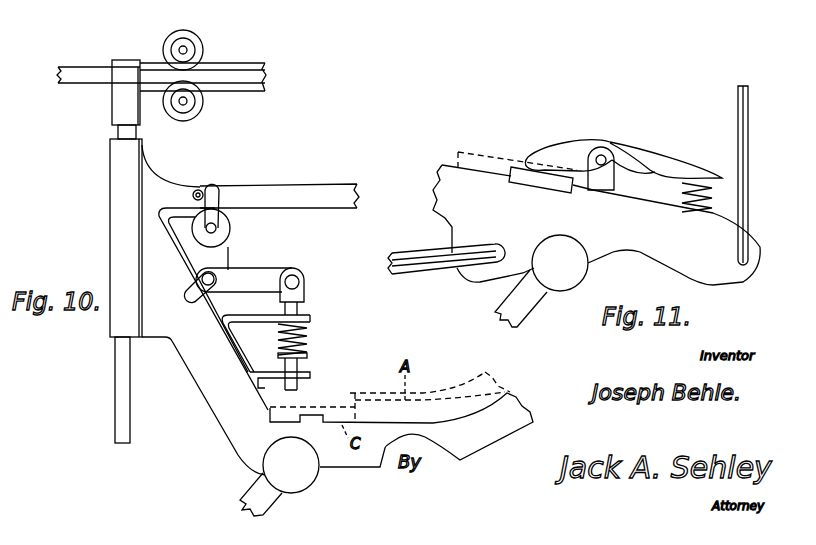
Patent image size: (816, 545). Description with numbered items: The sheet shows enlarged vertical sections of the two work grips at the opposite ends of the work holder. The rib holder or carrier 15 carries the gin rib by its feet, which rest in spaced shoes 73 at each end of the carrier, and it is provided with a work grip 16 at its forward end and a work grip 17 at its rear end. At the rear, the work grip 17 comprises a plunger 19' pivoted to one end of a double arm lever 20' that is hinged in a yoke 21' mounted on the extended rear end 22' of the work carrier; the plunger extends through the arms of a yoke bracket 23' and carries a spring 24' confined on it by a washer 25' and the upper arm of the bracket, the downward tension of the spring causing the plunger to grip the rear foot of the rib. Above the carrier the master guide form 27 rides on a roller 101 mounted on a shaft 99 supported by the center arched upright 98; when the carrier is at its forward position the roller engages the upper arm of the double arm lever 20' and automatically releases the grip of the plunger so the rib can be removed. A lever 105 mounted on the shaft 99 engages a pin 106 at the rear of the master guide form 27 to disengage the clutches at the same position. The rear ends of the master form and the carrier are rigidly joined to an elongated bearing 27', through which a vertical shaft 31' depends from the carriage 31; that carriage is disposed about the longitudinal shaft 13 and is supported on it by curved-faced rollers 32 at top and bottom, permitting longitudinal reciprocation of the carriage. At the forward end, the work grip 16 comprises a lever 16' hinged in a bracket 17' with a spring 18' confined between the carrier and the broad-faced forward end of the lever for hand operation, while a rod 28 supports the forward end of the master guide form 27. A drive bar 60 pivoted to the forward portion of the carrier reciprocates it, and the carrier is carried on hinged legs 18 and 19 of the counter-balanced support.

In FIG. 10, the longitudinal shaft 13 is at (66, 66).
In FIG. 10, the carriage 31 is at (203, 62).
In FIG. 10, the roller 32 is at (173, 32).
In FIG. 10, the master guide form 27 is at (281, 188).
In FIG. 10, the elongated bearing 27' is at (106, 238).
In FIG. 10, the vertical shaft 31' is at (102, 390).
In FIG. 10, the pin 106 is at (200, 189).
In FIG. 10, the lever 105 is at (214, 197).
In FIG. 10, the shaft 99 is at (214, 226).
In FIG. 10, the roller 101 is at (229, 229).
In FIG. 10, the center arched upright 98 is at (215, 255).
In FIG. 10, the extended rear end 22' is at (205, 341).
In FIG. 10, the double arm lever 20' is at (252, 265).
In FIG. 10, the yoke 21' is at (190, 294).
In FIG. 10, the work grip 17 is at (311, 283).
In FIG. 10, the yoke bracket 23' is at (290, 333).
In FIG. 10, the spring 24' is at (320, 337).
In FIG. 10, the washer 25' is at (321, 351).
In FIG. 10, the plunger 19' is at (301, 376).
In FIG. 10, the shoe 73 is at (283, 417).
In FIG. 10, the leg 19 is at (238, 494).
In FIG. 10, the rib holder or carrier 15 is at (492, 420).
In FIG. 11, the rib holder or carrier 15 is at (596, 228).
In FIG. 11, the drive bar 60 is at (420, 255).
In FIG. 11, the bracket 17' is at (563, 189).
In FIG. 11, the work grip 16 is at (623, 148).
In FIG. 11, the lever 16' is at (618, 140).
In FIG. 11, the spring 18' is at (686, 211).
In FIG. 11, the rod 28 is at (749, 163).
In FIG. 11, the leg 18 is at (526, 298).